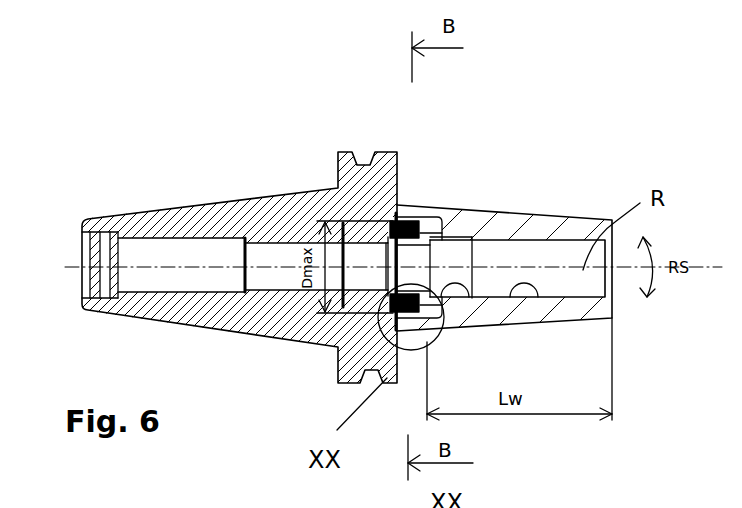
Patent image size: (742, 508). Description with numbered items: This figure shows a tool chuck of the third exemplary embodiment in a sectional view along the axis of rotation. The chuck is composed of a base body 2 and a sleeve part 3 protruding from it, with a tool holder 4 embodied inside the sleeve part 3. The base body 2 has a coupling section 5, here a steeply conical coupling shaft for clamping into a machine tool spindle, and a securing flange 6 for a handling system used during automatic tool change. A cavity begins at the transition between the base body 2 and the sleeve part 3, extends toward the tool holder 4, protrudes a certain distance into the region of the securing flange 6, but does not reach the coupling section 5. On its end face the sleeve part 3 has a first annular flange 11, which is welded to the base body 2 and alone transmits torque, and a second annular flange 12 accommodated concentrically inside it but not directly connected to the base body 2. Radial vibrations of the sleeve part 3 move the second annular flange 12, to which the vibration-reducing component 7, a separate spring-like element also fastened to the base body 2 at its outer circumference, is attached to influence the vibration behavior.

The base body 2 is at (165, 190).
The sleeve part 3 is at (551, 203).
The tool holder 4 is at (506, 300).
The coupling section 5 is at (240, 208).
The securing flange 6 is at (401, 200).
The vibration-reducing component 7 is at (388, 233).
The first annular flange 11 is at (415, 205).
The second annular flange 12 is at (405, 262).